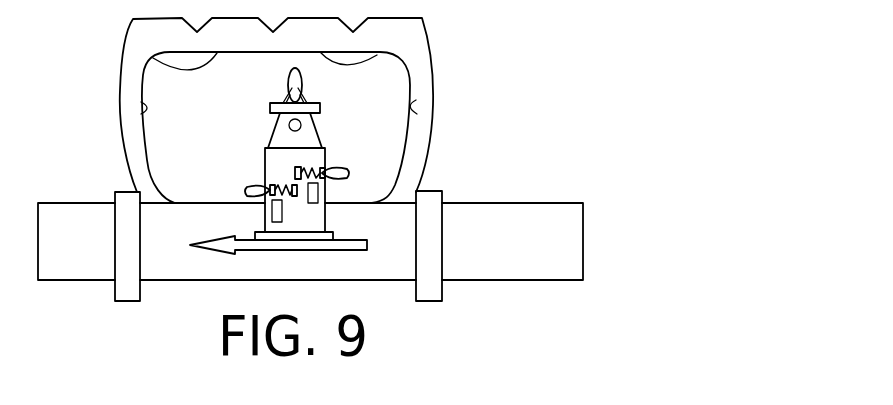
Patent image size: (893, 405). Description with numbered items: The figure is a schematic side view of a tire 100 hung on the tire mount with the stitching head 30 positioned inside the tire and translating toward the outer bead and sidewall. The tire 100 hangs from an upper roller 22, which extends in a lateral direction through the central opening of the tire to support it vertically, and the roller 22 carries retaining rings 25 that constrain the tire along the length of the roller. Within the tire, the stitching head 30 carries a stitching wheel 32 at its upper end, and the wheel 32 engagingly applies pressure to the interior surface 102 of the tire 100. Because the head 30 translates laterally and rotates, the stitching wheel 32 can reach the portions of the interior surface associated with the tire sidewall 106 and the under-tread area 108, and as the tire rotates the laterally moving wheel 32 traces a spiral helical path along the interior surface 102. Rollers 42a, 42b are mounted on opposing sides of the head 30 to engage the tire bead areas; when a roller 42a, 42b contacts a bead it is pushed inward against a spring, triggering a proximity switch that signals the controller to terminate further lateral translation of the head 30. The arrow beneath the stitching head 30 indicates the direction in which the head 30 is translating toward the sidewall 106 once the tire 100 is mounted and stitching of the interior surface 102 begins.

The upper roller 22 is at (515, 281).
The retaining ring 25 is at (432, 191).
The stitching head 30 is at (236, 108).
The stitching wheel 32 is at (297, 79).
The roller 42a is at (250, 190).
The roller 42b is at (347, 174).
The tire 100 is at (430, 62).
The interior surface 102 is at (320, 53).
The tire sidewall 106 is at (150, 108).
The under-tread area 108 is at (215, 63).